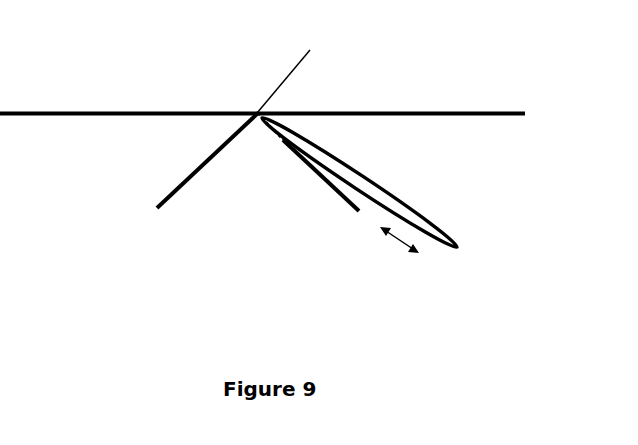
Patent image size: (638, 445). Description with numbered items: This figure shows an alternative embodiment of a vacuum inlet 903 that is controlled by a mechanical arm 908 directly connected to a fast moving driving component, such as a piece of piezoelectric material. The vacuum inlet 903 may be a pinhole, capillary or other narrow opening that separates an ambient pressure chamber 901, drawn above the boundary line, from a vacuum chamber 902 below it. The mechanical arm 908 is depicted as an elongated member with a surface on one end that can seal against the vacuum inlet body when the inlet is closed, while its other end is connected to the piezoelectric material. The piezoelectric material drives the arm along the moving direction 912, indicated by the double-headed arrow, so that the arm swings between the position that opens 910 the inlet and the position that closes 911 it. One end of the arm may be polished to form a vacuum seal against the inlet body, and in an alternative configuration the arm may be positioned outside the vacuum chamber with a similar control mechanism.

The ambient pressure chamber 901 is at (262, 72).
The vacuum chamber 902 is at (168, 160).
The vacuum inlet 903 is at (293, 69).
The mechanical arm 908 is at (442, 240).
The open position 910 is at (285, 140).
The closed position 911 is at (258, 113).
The moving direction 912 is at (398, 239).